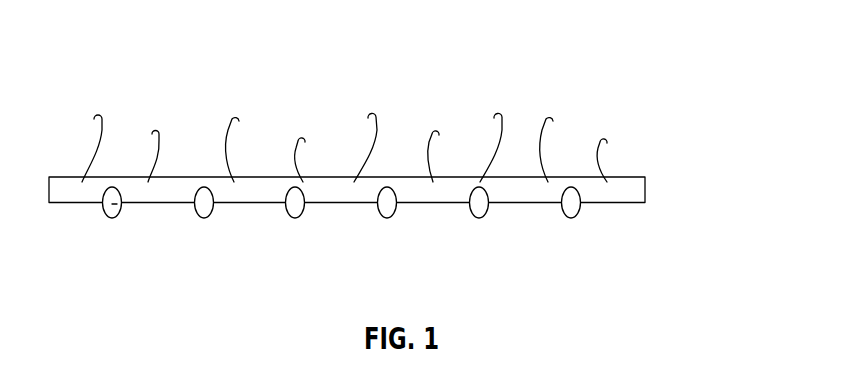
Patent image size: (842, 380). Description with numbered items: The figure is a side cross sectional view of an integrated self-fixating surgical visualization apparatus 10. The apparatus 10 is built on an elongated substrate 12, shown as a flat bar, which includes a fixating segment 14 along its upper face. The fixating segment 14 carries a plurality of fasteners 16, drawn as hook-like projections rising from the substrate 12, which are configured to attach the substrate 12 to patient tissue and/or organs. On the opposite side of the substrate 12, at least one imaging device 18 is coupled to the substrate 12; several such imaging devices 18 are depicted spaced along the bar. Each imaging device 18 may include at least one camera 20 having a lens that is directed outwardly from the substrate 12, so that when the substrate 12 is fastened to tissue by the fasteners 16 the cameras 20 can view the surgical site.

The surgical visualization apparatus 10 is at (619, 67).
The substrate 12 is at (646, 190).
The fixating segment 14 is at (649, 127).
The fasteners 16 is at (546, 112).
The imaging device 18 is at (110, 219).
The camera 20 is at (117, 204).